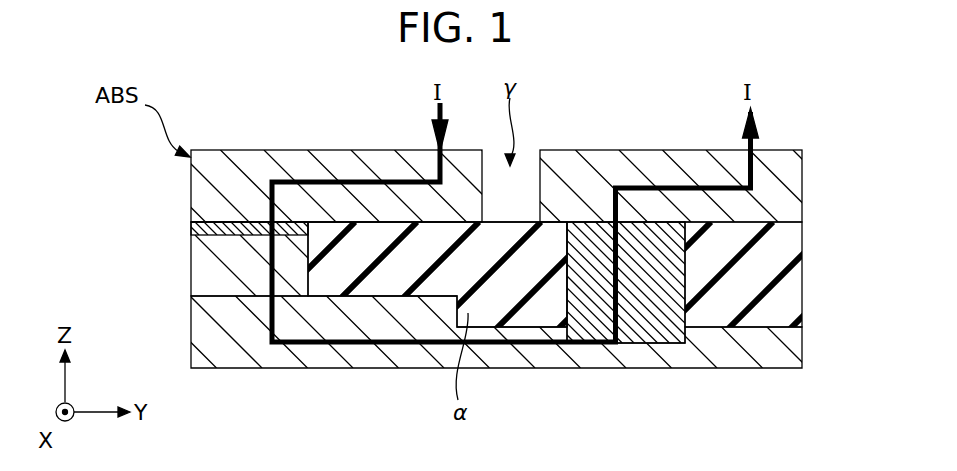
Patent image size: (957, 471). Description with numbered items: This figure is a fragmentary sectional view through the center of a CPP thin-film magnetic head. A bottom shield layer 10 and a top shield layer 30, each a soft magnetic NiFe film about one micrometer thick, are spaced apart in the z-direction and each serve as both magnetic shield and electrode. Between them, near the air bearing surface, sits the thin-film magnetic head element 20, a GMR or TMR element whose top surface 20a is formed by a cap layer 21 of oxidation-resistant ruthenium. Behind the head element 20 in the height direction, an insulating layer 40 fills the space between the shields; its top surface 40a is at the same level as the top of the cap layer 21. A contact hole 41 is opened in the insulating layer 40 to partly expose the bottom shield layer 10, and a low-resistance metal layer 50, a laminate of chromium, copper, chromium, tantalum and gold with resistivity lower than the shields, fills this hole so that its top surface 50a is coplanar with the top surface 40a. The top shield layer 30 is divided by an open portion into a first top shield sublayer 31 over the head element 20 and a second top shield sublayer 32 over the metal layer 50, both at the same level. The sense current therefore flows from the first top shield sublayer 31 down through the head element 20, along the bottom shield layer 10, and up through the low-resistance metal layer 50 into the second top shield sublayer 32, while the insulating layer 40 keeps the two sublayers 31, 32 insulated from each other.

The bottom shield layer 10 is at (203, 328).
The thin-film magnetic head element 20 is at (180, 298).
The upper surface of lower shield layer 20a is at (242, 222).
The cap layer 21 is at (212, 222).
The top shield layer 30 is at (500, 143).
The first top shield sublayer 31 is at (298, 158).
The second top shield sublayer 32 is at (641, 160).
The insulating layer 40 is at (535, 307).
The top surface 40a is at (381, 223).
The contact hole 41 is at (577, 226).
The low-resistance metal layer 50 is at (665, 335).
The top surface of the low-resistance metal layer 50a is at (634, 232).